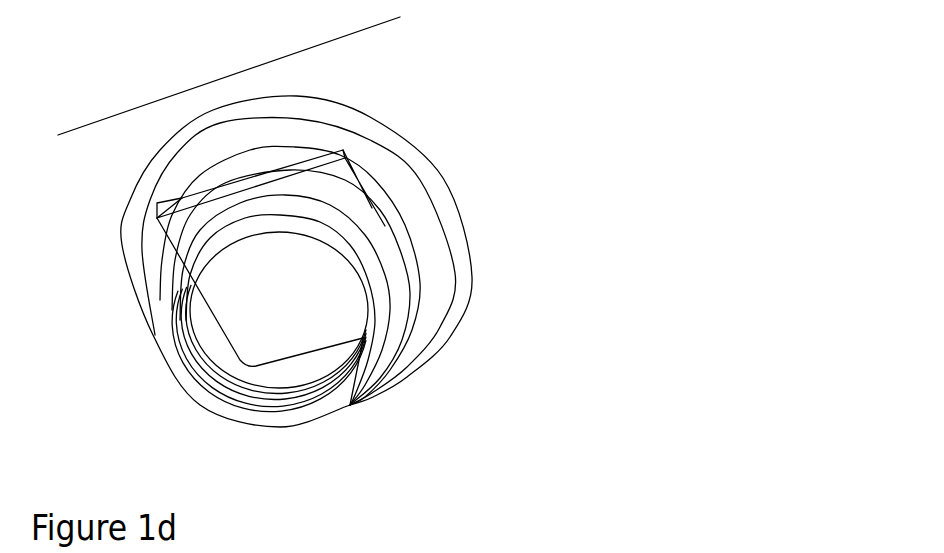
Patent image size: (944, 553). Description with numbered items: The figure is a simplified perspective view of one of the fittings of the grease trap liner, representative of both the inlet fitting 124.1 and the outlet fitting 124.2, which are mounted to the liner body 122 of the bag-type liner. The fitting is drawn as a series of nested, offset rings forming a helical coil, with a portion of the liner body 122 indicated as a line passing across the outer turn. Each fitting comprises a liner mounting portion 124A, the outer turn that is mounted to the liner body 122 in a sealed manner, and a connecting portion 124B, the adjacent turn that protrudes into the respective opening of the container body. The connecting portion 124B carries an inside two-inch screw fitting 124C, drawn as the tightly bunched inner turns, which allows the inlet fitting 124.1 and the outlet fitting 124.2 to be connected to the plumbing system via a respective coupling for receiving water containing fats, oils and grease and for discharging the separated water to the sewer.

The liner body 122 is at (355, 85).
The inlet fitting 124.1 is at (381, 242).
The outlet fitting 124.2 is at (381, 242).
The liner mounting portion 124A is at (380, 168).
The connecting portion 124B is at (347, 237).
The inside screw fitting 124C is at (353, 405).